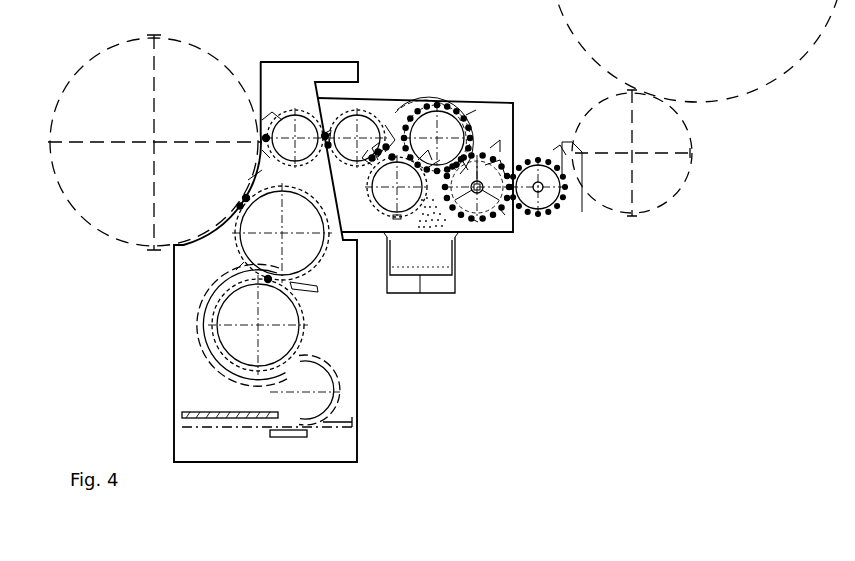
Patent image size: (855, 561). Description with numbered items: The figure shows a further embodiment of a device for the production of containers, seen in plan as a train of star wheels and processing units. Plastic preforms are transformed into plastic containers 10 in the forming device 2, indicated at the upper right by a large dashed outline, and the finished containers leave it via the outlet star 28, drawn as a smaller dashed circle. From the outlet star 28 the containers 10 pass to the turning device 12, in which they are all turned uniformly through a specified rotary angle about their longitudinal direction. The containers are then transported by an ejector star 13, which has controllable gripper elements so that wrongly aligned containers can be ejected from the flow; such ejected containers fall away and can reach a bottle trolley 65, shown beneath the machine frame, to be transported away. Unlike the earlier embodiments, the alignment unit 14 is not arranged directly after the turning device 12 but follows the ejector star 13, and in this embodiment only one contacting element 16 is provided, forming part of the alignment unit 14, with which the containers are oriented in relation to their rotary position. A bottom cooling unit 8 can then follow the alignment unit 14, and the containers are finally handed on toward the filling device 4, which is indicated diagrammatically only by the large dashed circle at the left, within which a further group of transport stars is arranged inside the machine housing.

The forming device 2 is at (698, 80).
The filling device 4 is at (240, 62).
The bottom cooling unit 8 is at (390, 178).
The plastic containers 10 is at (522, 152).
The turning device 12 is at (543, 200).
The ejector star 13 is at (495, 150).
The alignment unit 14 is at (484, 112).
The contacting element 16 is at (472, 122).
The outlet star 28 is at (642, 162).
The bottle trolley 65 is at (437, 273).